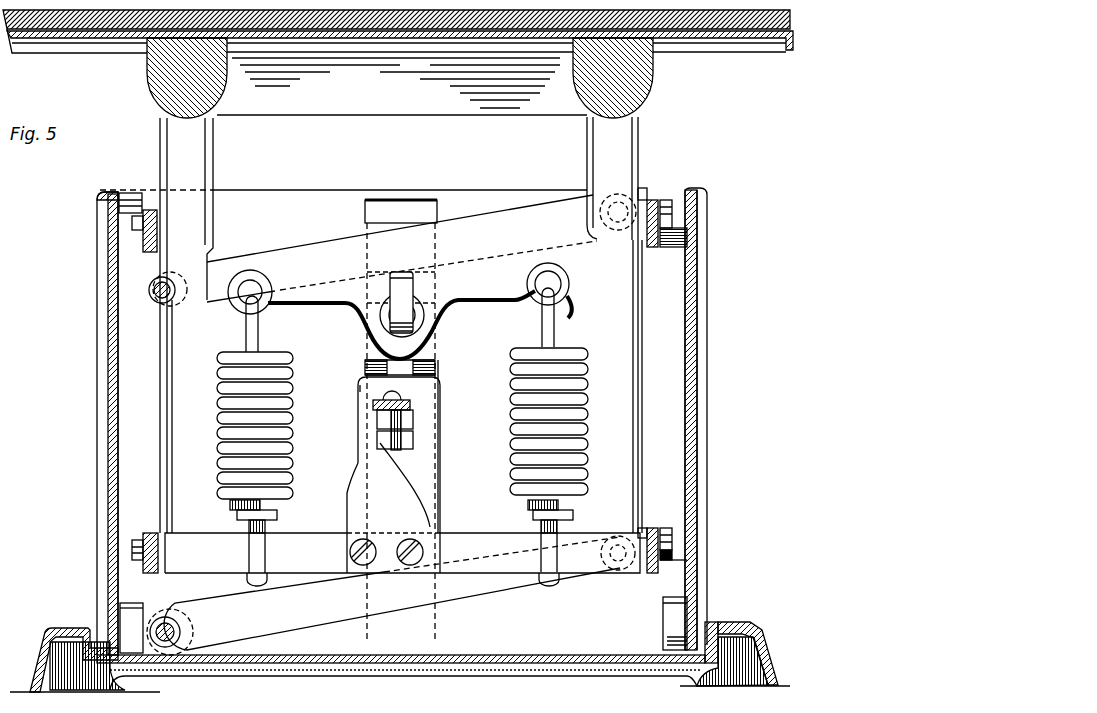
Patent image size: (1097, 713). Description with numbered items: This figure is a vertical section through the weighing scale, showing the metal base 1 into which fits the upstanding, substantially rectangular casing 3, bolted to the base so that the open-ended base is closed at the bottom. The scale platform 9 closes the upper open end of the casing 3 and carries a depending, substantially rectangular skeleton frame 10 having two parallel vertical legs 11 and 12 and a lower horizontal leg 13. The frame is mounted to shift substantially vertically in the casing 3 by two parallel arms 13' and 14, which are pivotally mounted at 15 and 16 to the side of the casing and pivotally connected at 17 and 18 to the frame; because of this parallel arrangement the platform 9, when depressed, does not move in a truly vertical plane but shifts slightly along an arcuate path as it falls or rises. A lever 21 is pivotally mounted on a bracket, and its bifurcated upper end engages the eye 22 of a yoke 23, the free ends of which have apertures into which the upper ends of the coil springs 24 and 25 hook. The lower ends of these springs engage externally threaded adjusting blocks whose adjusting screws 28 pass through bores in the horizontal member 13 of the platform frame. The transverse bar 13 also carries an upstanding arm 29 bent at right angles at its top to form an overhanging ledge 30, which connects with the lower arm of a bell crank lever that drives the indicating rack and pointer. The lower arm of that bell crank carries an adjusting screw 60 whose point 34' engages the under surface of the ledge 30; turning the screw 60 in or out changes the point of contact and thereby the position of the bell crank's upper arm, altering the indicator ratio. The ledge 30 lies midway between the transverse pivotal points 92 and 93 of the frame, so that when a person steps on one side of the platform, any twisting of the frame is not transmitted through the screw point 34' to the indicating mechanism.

The base 1 is at (38, 658).
The casing 3 is at (690, 420).
The scale platform 9 is at (667, 40).
The depending frame 10 is at (627, 153).
The vertical leg 11 is at (638, 315).
The vertical leg 12 is at (175, 378).
The lower horizontal leg 13 is at (402, 523).
The parallel arm 13' is at (402, 248).
The parallel arm 14 is at (322, 612).
The pivot 15 is at (152, 290).
The pivot 16 is at (157, 627).
The pivotal connection 17 is at (640, 187).
The pivotal connection 18 is at (617, 572).
The lever 21 is at (413, 423).
The eye 22 is at (410, 313).
The yoke 23 is at (340, 270).
The coil spring 24 is at (553, 337).
The coil spring 25 is at (260, 335).
The adjusting screw 28 is at (265, 527).
The upstanding arm 29 is at (397, 495).
The overhanging ledge 30 is at (417, 385).
The point of adjusting screw 34' is at (333, 386).
The adjusting screw 60 is at (413, 404).
The pivot 92 is at (668, 230).
The pivot 93 is at (668, 537).